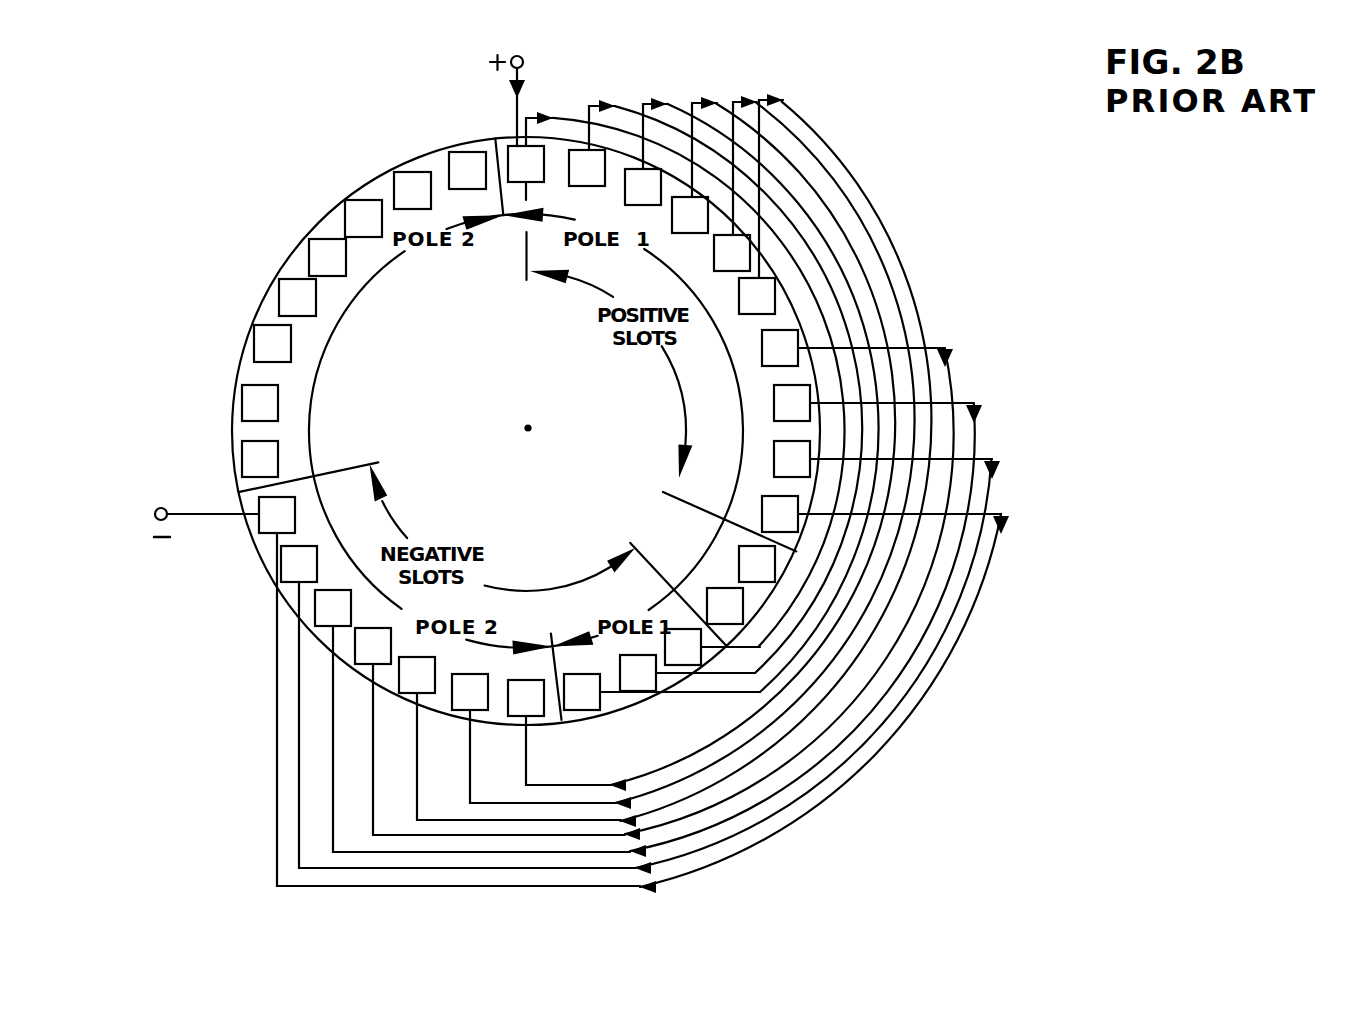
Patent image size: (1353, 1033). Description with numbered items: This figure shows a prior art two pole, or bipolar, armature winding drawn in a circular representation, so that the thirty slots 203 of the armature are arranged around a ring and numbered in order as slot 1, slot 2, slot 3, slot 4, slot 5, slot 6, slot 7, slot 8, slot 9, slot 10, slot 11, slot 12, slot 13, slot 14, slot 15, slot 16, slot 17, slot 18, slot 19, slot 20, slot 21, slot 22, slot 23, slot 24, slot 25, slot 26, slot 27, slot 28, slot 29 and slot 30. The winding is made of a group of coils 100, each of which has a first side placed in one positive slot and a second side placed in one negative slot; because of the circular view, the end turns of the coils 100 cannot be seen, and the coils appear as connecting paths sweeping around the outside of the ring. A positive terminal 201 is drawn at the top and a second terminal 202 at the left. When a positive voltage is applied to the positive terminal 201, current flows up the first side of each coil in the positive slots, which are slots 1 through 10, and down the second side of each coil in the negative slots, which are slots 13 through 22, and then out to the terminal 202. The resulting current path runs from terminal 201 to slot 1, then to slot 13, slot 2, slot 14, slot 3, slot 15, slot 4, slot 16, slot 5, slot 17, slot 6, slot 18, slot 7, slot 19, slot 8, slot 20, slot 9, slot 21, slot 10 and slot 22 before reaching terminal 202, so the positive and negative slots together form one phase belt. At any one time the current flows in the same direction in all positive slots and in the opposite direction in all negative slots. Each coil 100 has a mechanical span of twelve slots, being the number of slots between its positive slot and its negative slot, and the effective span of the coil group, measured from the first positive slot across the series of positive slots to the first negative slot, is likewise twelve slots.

The coils 100 is at (776, 181).
The positive terminal 201 is at (546, 64).
The terminal 202 is at (181, 490).
The slots 203 is at (331, 305).
The slot 1 is at (530, 159).
The slot 2 is at (592, 146).
The slot 3 is at (646, 154).
The slot 4 is at (694, 168).
The slot 5 is at (735, 186).
The slot 6 is at (761, 207).
The slot 7 is at (853, 348).
The slot 8 is at (874, 403).
The slot 9 is at (883, 459).
The slot 10 is at (881, 514).
The slot 11 is at (757, 564).
The slot 12 is at (725, 606).
The slot 13 is at (712, 647).
The slot 14 is at (687, 673).
The slot 15 is at (662, 692).
The slot 16 is at (559, 732).
The slot 17 is at (534, 738).
The slot 18 is at (510, 738).
The slot 19 is at (490, 731).
The slot 20 is at (472, 721).
The slot 21 is at (458, 707).
The slot 22 is at (449, 691).
The slot 23 is at (260, 459).
The slot 24 is at (260, 403).
The slot 25 is at (272, 343).
The slot 26 is at (297, 297).
The slot 27 is at (327, 257).
The slot 28 is at (363, 218).
The slot 29 is at (412, 190).
The slot 30 is at (467, 170).